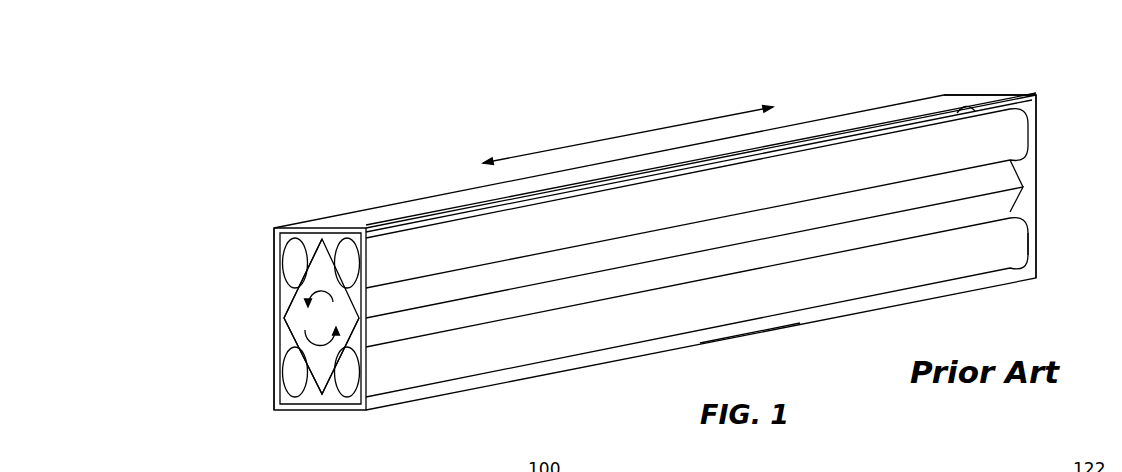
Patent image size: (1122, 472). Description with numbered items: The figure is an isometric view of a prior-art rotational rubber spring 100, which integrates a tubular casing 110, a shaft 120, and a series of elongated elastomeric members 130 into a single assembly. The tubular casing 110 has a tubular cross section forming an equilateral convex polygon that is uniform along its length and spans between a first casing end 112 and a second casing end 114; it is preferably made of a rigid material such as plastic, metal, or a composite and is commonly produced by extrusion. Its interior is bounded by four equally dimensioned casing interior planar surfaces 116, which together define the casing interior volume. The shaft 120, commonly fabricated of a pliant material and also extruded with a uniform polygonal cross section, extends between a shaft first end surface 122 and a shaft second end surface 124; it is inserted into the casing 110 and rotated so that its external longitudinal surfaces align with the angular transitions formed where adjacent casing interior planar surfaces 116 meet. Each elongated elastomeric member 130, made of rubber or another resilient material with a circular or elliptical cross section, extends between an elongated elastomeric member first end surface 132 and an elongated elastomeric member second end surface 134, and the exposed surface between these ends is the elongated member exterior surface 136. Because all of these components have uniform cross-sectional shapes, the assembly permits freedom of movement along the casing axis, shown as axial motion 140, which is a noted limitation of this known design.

The rotational rubber spring 100 is at (256, 140).
The tubular casing 110 is at (436, 203).
The first casing end 112 is at (263, 233).
The second casing end 114 is at (1016, 85).
The casing interior planar surfaces 116 is at (288, 349).
The shaft 120 is at (992, 203).
The shaft first end surface 122 is at (286, 316).
The shaft second end surface 124 is at (1023, 174).
The elongated elastomeric member 130 is at (985, 143).
The elongated elastomeric member first end surface 132 is at (296, 271).
The elongated elastomeric member second end surface 134 is at (1030, 238).
The elongated member exterior surface 136 is at (779, 286).
The axial motion 140 is at (627, 134).